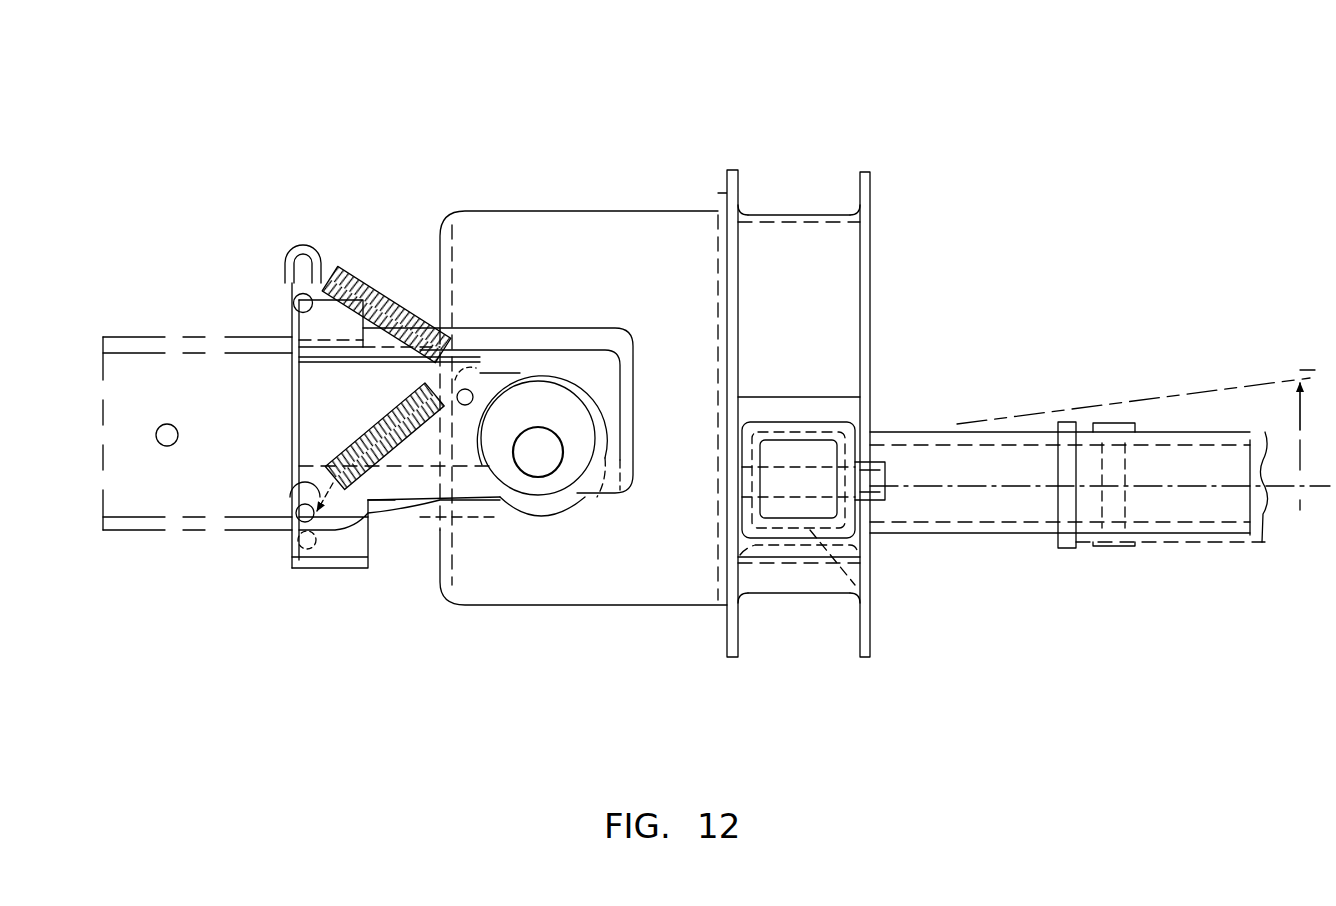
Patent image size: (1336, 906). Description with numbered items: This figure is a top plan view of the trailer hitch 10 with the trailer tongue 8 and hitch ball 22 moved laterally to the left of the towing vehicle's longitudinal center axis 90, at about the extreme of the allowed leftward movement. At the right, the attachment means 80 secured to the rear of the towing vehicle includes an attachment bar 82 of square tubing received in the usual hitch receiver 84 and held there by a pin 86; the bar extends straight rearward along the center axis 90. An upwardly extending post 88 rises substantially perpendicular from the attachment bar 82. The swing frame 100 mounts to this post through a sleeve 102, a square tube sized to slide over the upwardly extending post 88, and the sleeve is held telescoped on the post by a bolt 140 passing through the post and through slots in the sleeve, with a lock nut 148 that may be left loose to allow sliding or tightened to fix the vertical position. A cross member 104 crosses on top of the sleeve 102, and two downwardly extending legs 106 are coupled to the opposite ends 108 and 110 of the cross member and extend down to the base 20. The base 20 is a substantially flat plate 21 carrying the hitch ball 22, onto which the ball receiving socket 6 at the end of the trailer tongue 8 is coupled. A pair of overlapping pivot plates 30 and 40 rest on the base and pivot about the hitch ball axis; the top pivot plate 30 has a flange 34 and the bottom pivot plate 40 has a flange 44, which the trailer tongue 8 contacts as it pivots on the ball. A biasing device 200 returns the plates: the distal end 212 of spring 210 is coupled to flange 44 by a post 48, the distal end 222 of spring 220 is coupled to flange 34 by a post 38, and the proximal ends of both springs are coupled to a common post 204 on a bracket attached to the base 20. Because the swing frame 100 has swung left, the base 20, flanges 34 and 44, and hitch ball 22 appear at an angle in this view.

The ball receiving socket 6 is at (600, 385).
The trailer tongue 8 is at (133, 332).
The trailer hitch 10 is at (606, 90).
The base 20 is at (613, 605).
The flat plate 21 is at (680, 553).
The hitch ball 22 is at (507, 470).
The top pivot plate 30 is at (608, 470).
The flange 34 is at (338, 566).
The post 38 is at (308, 570).
The bottom pivot plate 40 is at (568, 338).
The flange 44 is at (305, 328).
The post 48 is at (297, 282).
The attachment means 80 is at (1082, 366).
The attachment bar 82 is at (958, 537).
The hitch receiver 84 is at (1205, 545).
The pin 86 is at (1108, 550).
The upwardly extending post 88 is at (870, 590).
The longitudinal center axis 90 is at (1290, 495).
The swing frame 100 is at (947, 128).
The sleeve 102 is at (865, 565).
The cross member 104 is at (815, 370).
The downwardly extending legs 106 is at (868, 208).
The end of cross member 108 is at (780, 595).
The end of cross member 110 is at (776, 215).
The bolt 140 is at (848, 392).
The lock nut 148 is at (868, 455).
The biasing device 200 is at (284, 170).
The post 204 is at (488, 365).
The spring 210 is at (380, 298).
The distal end of spring 210 212 is at (300, 248).
The spring 220 is at (398, 458).
The distal end of spring 220 222 is at (292, 495).